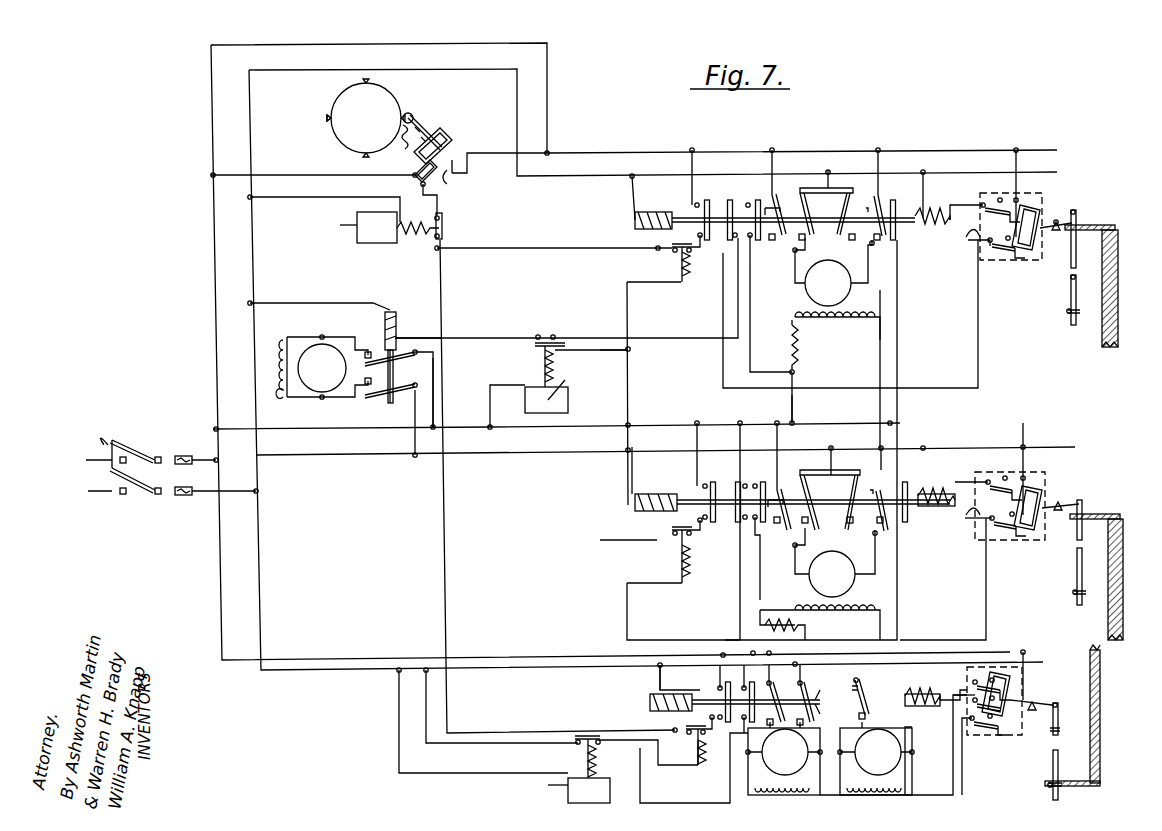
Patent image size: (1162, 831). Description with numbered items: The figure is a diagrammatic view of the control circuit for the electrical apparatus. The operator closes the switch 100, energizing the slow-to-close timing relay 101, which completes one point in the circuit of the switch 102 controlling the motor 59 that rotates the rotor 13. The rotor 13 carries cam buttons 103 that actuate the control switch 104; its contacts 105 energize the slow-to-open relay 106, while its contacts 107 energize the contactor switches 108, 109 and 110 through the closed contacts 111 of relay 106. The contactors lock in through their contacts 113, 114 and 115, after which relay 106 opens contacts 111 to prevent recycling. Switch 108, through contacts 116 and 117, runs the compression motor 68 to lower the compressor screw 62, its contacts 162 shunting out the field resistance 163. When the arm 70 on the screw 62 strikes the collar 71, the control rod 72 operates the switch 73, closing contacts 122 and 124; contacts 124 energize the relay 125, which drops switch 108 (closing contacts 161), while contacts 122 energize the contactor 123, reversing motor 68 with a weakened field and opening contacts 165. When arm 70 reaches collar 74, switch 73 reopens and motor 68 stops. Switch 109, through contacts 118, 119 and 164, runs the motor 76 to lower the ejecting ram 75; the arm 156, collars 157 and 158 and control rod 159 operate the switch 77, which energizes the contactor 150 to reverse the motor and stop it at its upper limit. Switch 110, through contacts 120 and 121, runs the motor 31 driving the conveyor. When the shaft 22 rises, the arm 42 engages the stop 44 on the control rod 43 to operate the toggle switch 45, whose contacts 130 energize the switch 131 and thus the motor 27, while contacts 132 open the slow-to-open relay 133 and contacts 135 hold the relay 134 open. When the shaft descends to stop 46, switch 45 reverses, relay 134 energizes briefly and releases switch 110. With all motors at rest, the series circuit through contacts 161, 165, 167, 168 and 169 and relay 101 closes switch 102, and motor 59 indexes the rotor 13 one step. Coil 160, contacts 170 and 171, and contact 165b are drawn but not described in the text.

The rotor 13 is at (385, 98).
The cam buttons 103 is at (328, 120).
The control switch 104 is at (437, 140).
The contacts 105 is at (413, 182).
The slow-to-open relay 106 is at (375, 243).
The contacts 107 is at (446, 180).
The contacts 111 is at (435, 242).
The switch 102 is at (398, 316).
The motor 59 is at (315, 380).
The slow-to-close timing relay 101 is at (535, 357).
The switch 100 is at (150, 452).
The contactor switch 108 is at (633, 220).
The relay 160 is at (687, 250).
The relay 125 is at (684, 273).
The contacts 113 is at (705, 202).
The contacts 161 is at (729, 197).
The contacts 162 is at (754, 221).
The contacts 116 is at (782, 195).
The contacts 117 is at (825, 175).
The contacts 165 is at (897, 204).
The compression motor 68 is at (842, 292).
The field resistance 163 is at (798, 346).
The switch 73 is at (1042, 195).
The contacts 122 is at (985, 199).
The contacts 124 is at (985, 248).
The contactor 123 is at (926, 225).
The adjustable set collar 74 is at (1072, 225).
The arm 70 is at (1095, 226).
The compressor screw 62 is at (1118, 290).
The control rod 72 is at (1069, 286).
The adjustable set collar stop 71 is at (1068, 313).
The contactor switch 109 is at (633, 504).
The contacts 114 is at (702, 480).
The contacts 169 is at (736, 484).
The contacts 164 is at (690, 521).
The relay coil 165b is at (698, 578).
The contacts 118 is at (783, 488).
The contacts 119 is at (844, 500).
The contacts 167 is at (906, 482).
The contactor 150 is at (932, 490).
The motor 76 is at (855, 580).
The switch 77 is at (1046, 474).
The contact 171 is at (1000, 480).
The contact 170 is at (976, 530).
The adjustable collar 157 is at (1083, 510).
The arm 156 is at (1100, 516).
The ejecting ram 75 is at (1123, 556).
The control rod 159 is at (1076, 580).
The adjustable collar 158 is at (1074, 594).
The contactor switch 110 is at (648, 704).
The contacts 115 is at (718, 690).
The contacts 168 is at (754, 696).
The contacts 120 is at (785, 693).
The contacts 121 is at (810, 705).
The motor 31 is at (784, 758).
The motor 27 is at (876, 736).
The switch 131 is at (922, 692).
The mechanical toggle switch 45 is at (1002, 733).
The contacts 130 is at (980, 685).
The contacts 135 is at (972, 703).
The contacts 132 is at (973, 728).
The adjustable stop 44 is at (1058, 728).
The control rod 43 is at (1058, 766).
The shaft 22 is at (1100, 754).
The arm 42 is at (1085, 792).
The adjustable stop 46 is at (1048, 790).
The slow-to-open relay 133 is at (600, 780).
The relay 134 is at (708, 762).